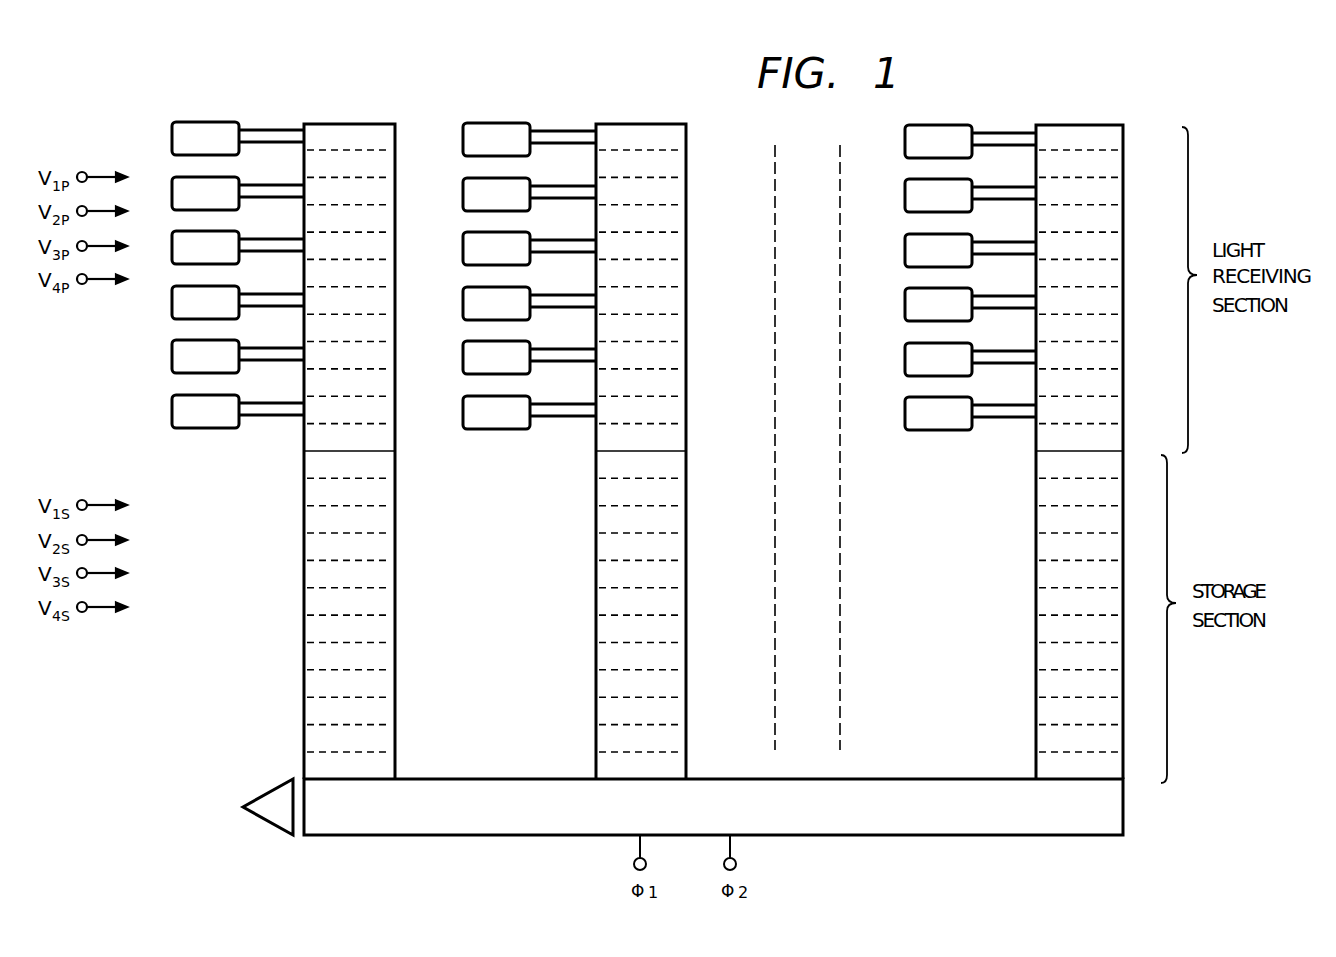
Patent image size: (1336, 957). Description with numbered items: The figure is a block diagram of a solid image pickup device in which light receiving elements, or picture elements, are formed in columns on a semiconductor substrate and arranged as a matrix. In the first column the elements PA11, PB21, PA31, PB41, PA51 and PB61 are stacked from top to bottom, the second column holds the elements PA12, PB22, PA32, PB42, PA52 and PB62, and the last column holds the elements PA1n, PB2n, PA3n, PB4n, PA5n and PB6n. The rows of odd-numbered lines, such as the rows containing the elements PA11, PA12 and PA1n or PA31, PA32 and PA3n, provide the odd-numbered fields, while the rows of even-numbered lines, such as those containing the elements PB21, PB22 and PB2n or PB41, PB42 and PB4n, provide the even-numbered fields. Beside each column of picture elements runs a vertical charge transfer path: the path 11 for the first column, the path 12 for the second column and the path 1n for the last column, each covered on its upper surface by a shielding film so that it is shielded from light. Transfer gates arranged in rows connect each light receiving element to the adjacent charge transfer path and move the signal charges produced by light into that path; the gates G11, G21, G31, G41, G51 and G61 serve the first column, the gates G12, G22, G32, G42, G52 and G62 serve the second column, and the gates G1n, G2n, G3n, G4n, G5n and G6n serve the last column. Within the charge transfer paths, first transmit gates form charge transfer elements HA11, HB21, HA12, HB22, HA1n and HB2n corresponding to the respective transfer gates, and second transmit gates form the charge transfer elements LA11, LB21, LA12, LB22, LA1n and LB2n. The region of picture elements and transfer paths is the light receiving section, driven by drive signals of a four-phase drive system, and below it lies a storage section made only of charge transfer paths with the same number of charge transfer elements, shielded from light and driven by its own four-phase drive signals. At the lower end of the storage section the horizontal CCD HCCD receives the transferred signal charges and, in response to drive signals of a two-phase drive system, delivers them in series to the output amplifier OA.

The charge transfer path 11 is at (352, 124).
The charge transfer path 12 is at (643, 124).
The charge transfer path 1n is at (1078, 125).
The light receiving element PA11 is at (205, 138).
The light receiving element PB21 is at (205, 193).
The light receiving element PA31 is at (205, 247).
The light receiving element PB41 is at (205, 302).
The light receiving element PA51 is at (205, 356).
The light receiving element PB61 is at (205, 411).
The light receiving element PA12 is at (496, 139).
The light receiving element PB22 is at (496, 194).
The light receiving element PA32 is at (496, 248).
The light receiving element PB42 is at (496, 303).
The light receiving element PA52 is at (496, 357).
The light receiving element PB62 is at (496, 412).
The light receiving element PA1n is at (938, 141).
The light receiving element PB2n is at (938, 195).
The light receiving element PA3n is at (938, 250).
The light receiving element PB4n is at (938, 304).
The light receiving element PA5n is at (938, 359).
The light receiving element PB6n is at (938, 413).
The transfer gate G11 is at (255, 130).
The transfer gate G21 is at (255, 185).
The transfer gate G31 is at (255, 239).
The transfer gate G41 is at (255, 294).
The transfer gate G51 is at (255, 348).
The transfer gate G61 is at (255, 403).
The transfer gate G12 is at (546, 131).
The transfer gate G22 is at (546, 186).
The transfer gate G32 is at (546, 240).
The transfer gate G42 is at (546, 295).
The transfer gate G52 is at (546, 349).
The transfer gate G62 is at (546, 404).
The transfer gate G1n is at (988, 133).
The transfer gate G2n is at (988, 187).
The transfer gate G3n is at (988, 242).
The transfer gate G4n is at (988, 296).
The transfer gate G5n is at (988, 351).
The transfer gate G6n is at (988, 405).
The charge transfer element HA11 is at (396, 136).
The charge transfer element LA11 is at (396, 164).
The charge transfer element HB21 is at (396, 192).
The charge transfer element LB21 is at (396, 220).
The charge transfer element HA12 is at (687, 136).
The charge transfer element LA12 is at (687, 164).
The charge transfer element HB22 is at (687, 192).
The charge transfer element LB22 is at (687, 220).
The charge transfer element HA1n is at (1123, 137).
The charge transfer element LA1n is at (1123, 165).
The charge transfer element HB2n is at (1123, 193).
The charge transfer element LB2n is at (1123, 221).
The horizontal CCD HCCD is at (713, 807).
The output amplifier OA is at (276, 817).